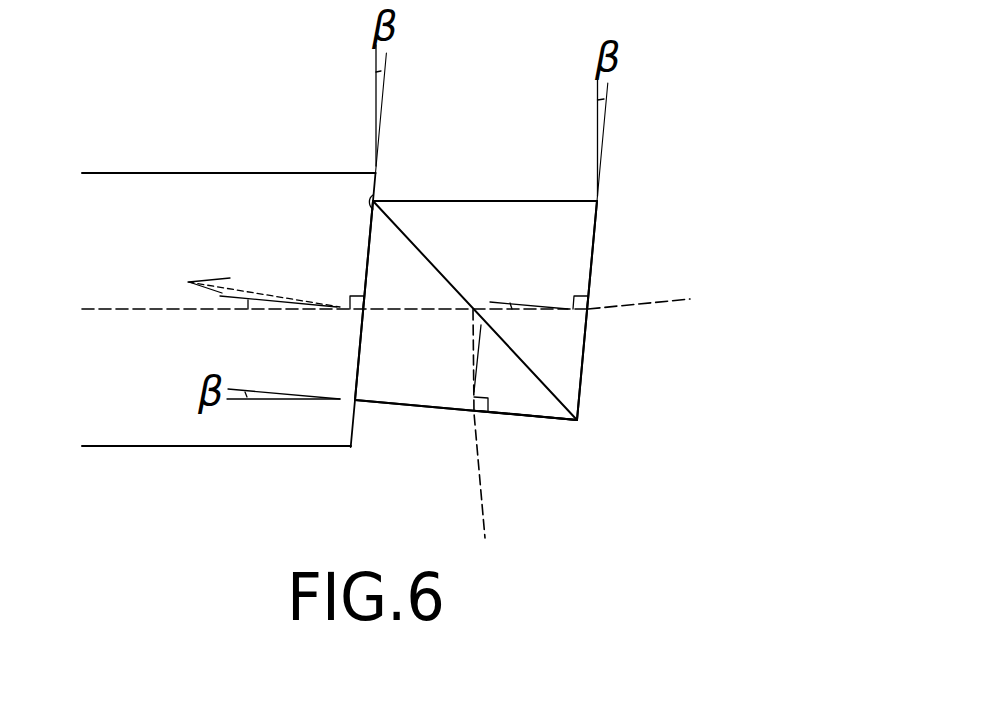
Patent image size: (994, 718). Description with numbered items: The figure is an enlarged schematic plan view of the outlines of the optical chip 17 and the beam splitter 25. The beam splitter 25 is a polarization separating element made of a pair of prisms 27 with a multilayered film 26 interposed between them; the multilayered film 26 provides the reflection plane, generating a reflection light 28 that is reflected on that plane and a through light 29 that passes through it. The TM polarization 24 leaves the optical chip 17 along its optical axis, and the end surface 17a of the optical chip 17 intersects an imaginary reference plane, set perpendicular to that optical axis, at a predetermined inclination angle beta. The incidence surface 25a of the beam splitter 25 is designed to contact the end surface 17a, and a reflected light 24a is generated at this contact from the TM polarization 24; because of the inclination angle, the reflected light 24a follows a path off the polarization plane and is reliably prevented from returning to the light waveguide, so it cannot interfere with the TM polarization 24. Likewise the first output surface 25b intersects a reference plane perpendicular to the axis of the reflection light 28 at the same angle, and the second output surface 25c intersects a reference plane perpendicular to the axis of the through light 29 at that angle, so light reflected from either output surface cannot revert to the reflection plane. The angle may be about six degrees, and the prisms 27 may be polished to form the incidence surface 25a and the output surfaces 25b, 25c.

The optical chip 17 is at (232, 173).
The end surface 17a is at (351, 447).
The TM polarization 24 is at (178, 311).
The reflected light 24a is at (250, 291).
The beam splitter 25 is at (521, 311).
The incidence surface 25a is at (375, 199).
The first output surface 25b is at (418, 407).
The second output surface 25c is at (598, 243).
The multilayered film 26 is at (433, 264).
The prisms 27 is at (502, 201).
The reflection light 28 is at (478, 450).
The through light 29 is at (637, 308).